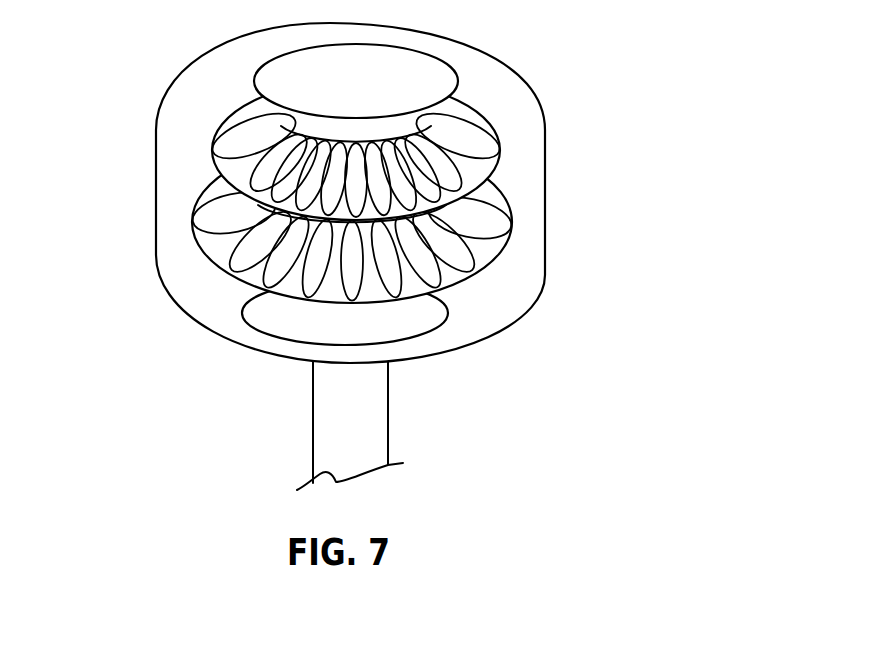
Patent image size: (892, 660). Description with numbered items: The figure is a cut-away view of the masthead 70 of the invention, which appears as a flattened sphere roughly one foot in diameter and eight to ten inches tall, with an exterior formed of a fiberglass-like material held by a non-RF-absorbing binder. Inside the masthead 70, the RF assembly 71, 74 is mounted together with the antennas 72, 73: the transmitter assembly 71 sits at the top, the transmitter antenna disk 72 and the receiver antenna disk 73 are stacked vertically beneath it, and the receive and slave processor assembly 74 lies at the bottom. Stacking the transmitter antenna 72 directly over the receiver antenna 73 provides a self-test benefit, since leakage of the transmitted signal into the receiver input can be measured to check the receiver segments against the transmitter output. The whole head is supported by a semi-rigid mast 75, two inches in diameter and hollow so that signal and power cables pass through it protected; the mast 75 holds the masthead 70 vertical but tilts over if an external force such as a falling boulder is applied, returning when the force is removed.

The masthead 70 is at (137, 300).
The transmitter assembly 71 is at (464, 82).
The transmitter antenna disk 72 is at (502, 147).
The receiver antenna disk 73 is at (512, 222).
The receive and slave processor assembly 74 is at (457, 311).
The mast 75 is at (392, 429).